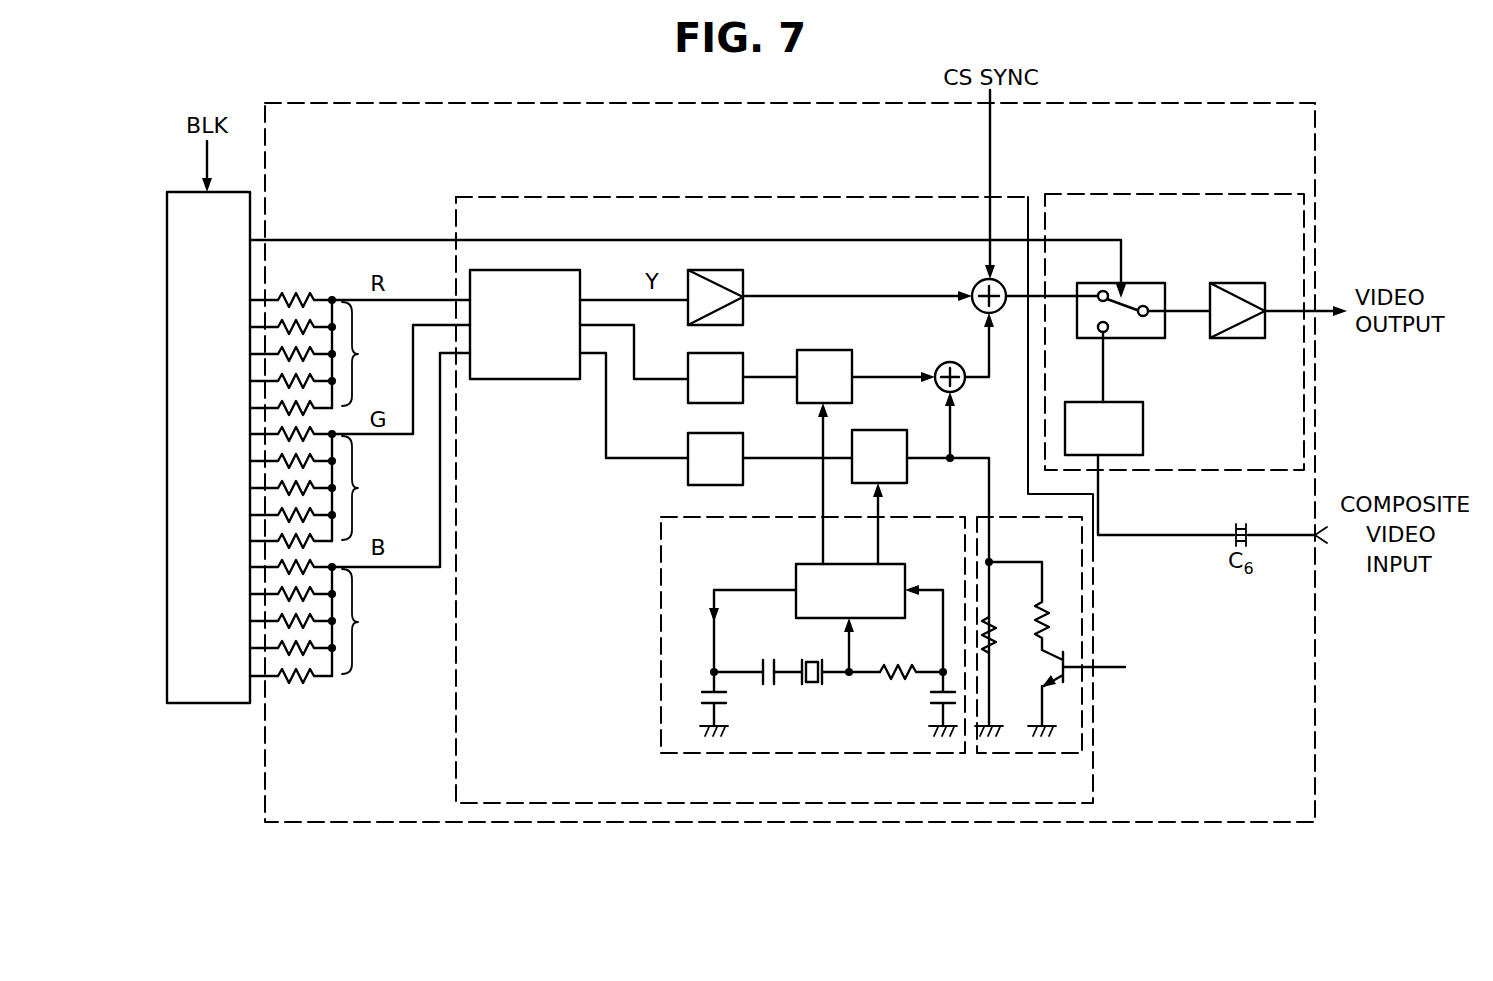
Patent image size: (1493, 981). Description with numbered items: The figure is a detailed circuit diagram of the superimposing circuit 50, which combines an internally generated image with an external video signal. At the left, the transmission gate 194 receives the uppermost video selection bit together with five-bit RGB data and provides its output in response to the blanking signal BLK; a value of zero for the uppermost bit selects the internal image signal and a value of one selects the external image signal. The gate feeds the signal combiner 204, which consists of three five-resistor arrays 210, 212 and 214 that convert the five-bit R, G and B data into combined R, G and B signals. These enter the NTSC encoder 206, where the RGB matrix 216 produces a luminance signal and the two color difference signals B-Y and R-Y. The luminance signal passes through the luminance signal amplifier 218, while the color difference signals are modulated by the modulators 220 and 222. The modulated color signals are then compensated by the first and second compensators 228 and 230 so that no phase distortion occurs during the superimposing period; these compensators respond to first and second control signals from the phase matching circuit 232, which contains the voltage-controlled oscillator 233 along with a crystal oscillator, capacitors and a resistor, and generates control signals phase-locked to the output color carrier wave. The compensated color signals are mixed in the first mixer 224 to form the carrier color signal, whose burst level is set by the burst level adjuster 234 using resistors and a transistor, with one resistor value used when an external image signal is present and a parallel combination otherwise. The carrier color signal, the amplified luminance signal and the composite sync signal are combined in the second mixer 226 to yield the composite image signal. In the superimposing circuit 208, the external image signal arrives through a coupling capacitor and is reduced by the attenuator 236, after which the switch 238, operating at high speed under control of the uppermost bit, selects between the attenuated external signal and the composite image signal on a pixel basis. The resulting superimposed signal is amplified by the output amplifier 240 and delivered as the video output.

The superimposing circuit 50 is at (1190, 103).
The transmission gate 194 is at (167, 275).
The signal combiner 204 is at (329, 426).
The NTSC encoder 206 is at (750, 197).
The superimposing circuit 208 is at (1200, 194).
The 5-resistor array 210 is at (329, 354).
The 5-resistor array 212 is at (329, 487).
The 5-resistor array 214 is at (329, 621).
The RGB matrix 216 is at (512, 380).
The luminance signal amplifier 218 is at (745, 273).
The modulator 220 is at (688, 399).
The modulator 222 is at (688, 482).
The first mixer 224 is at (950, 362).
The second mixer 226 is at (972, 286).
The first compensator 228 is at (822, 350).
The second compensator 230 is at (876, 430).
The phase matching circuit 232 is at (813, 602).
The voltage-controlled oscillator 233 is at (796, 572).
The burst level adjuster 234 is at (1035, 753).
The attenuator 236 is at (1128, 402).
The switch 238 is at (1155, 283).
The output amplifier 240 is at (1245, 283).